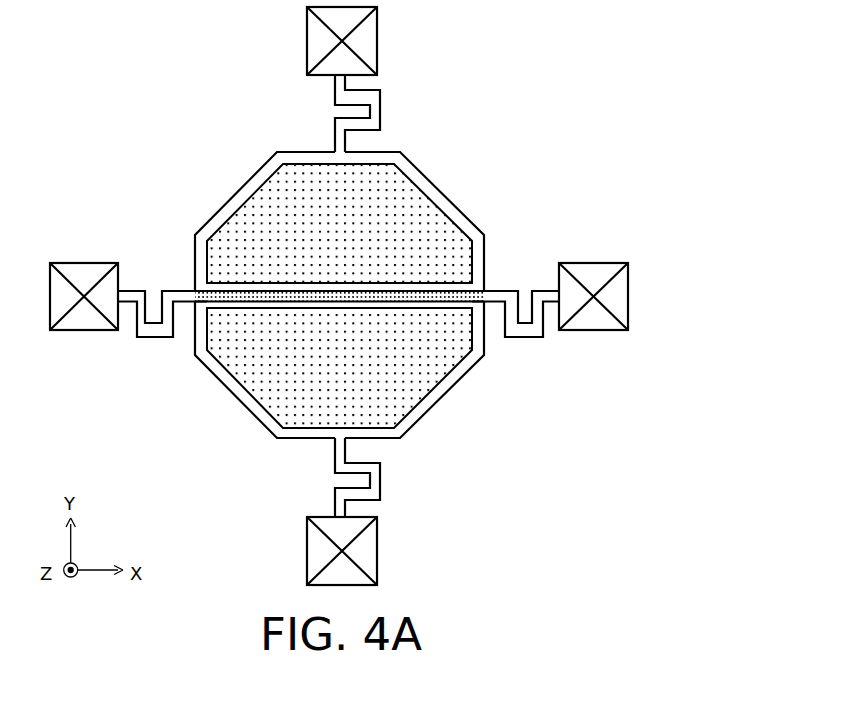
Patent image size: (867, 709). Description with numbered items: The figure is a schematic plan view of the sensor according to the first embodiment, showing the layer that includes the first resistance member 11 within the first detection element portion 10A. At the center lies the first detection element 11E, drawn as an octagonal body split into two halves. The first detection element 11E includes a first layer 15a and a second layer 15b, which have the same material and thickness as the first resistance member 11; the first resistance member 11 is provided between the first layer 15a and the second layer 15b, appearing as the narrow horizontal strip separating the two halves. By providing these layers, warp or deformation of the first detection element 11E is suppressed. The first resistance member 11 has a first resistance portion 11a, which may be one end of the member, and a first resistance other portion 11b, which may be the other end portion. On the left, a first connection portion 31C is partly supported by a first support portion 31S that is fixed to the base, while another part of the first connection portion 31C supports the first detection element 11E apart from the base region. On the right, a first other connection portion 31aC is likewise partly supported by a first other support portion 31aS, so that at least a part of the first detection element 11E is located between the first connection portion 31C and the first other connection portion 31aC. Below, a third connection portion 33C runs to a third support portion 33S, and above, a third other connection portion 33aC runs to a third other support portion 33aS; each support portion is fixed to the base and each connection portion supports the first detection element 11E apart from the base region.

The first detection element portion 10A is at (339, 296).
The first resistance member 11 is at (227, 292).
The first resistance portion 11a is at (193, 301).
The first resistance other portion 11b is at (481, 301).
The first detection element 11E is at (443, 183).
The first layer 15a is at (257, 332).
The second layer 15b is at (262, 245).
The first support portion 31S is at (87, 273).
The first connection portion 31C is at (137, 288).
The first other support portion 31aS is at (602, 272).
The first other connection portion 31aC is at (518, 290).
The third support portion 33S is at (367, 553).
The third connection portion 33C is at (382, 478).
The third other support portion 33aS is at (367, 37).
The third other connection portion 33aC is at (383, 110).